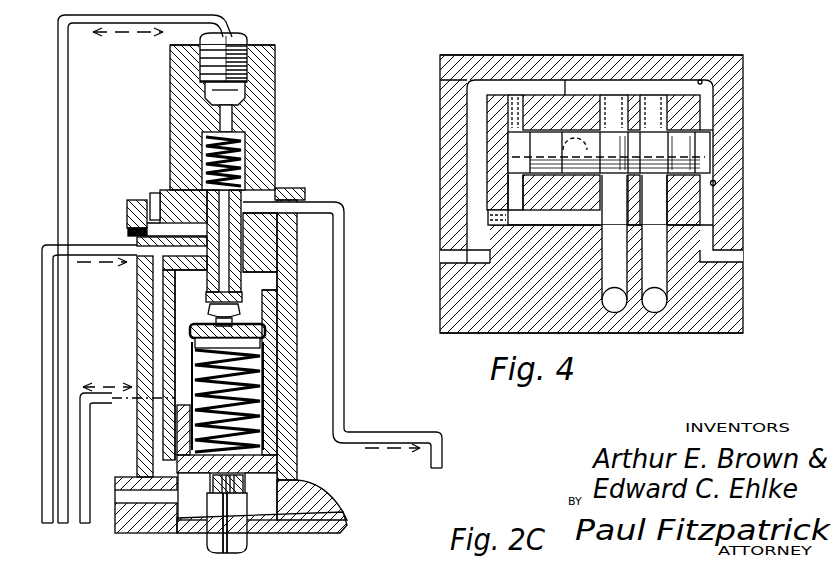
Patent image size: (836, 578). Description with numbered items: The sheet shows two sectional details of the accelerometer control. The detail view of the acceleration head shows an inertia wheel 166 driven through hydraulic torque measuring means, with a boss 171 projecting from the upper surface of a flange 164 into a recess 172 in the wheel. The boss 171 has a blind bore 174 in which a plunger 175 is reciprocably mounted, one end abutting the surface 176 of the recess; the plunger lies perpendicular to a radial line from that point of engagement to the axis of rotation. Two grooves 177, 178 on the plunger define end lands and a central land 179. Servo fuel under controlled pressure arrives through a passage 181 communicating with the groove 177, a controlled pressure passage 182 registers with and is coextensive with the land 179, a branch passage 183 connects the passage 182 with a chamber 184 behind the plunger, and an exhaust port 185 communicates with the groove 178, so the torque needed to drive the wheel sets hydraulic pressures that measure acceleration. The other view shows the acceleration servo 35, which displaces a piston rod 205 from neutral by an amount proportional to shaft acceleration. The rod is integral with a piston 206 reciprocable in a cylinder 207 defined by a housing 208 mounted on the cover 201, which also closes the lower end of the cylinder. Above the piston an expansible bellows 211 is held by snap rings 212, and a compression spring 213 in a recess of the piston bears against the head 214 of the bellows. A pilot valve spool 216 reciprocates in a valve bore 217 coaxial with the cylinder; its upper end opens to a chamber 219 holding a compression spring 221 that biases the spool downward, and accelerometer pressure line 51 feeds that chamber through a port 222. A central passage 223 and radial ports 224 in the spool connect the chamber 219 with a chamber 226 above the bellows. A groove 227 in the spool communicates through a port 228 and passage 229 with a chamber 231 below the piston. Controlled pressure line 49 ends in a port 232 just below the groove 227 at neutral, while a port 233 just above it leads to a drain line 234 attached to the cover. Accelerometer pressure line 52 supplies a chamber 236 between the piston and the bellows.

In FIG. 2C, the acceleration servo 35 is at (170, 108).
In FIG. 2C, the controlled pressure line 49 is at (47, 524).
In FIG. 2C, the accelerometer pressure line 51 is at (66, 524).
In FIG. 2C, the accelerometer pressure line 52 is at (88, 524).
In FIG. 2C, the cover 201 is at (345, 520).
In FIG. 2C, the piston rod 205 is at (247, 540).
In FIG. 2C, the piston 206 is at (278, 463).
In FIG. 2C, the cylinder 207 is at (297, 485).
In FIG. 2C, the housing 208 is at (275, 72).
In FIG. 2C, the expansible bellows 211 is at (265, 338).
In FIG. 2C, the snap rings 212 is at (265, 356).
In FIG. 2C, the compression spring 213 is at (262, 418).
In FIG. 2C, the head of the bellows 214 is at (240, 318).
In FIG. 2C, the pilot valve spool 216 is at (250, 178).
In FIG. 2C, the valve bore 217 is at (202, 177).
In FIG. 2C, the chamber 219 is at (252, 140).
In FIG. 2C, the compression spring 221 is at (205, 143).
In FIG. 2C, the port 222 is at (228, 95).
In FIG. 2C, the central passage 223 is at (245, 252).
In FIG. 2C, the radial ports 224 is at (242, 296).
In FIG. 2C, the chamber 226 is at (178, 295).
In FIG. 2C, the groove 227 is at (250, 222).
In FIG. 2C, the port 228 is at (130, 205).
In FIG. 2C, the passage 229 is at (160, 340).
In FIG. 2C, the chamber 231 is at (195, 500).
In FIG. 2C, the port 232 is at (178, 228).
In FIG. 2C, the port 233 is at (276, 193).
In FIG. 2C, the drain line 234 is at (390, 431).
In FIG. 2C, the chamber 236 is at (265, 392).
In FIG. 4, the flange 164 is at (743, 297).
In FIG. 4, the inertia wheel 166 is at (743, 78).
In FIG. 4, the boss 171 is at (565, 95).
In FIG. 4, the recess 172 is at (700, 80).
In FIG. 4, the blind bore 174 is at (582, 135).
In FIG. 4, the plunger 175 is at (712, 128).
In FIG. 4, the surface of the recess 176 is at (716, 184).
In FIG. 4, the groove 177 is at (668, 150).
In FIG. 4, the groove 178 is at (560, 122).
In FIG. 4, the central land 179 is at (620, 148).
In FIG. 4, the passage 181 is at (658, 275).
In FIG. 4, the controlled pressure passage 182 is at (607, 284).
In FIG. 4, the branch passage 183 is at (545, 222).
In FIG. 4, the chamber 184 is at (510, 157).
In FIG. 4, the exhaust port 185 is at (575, 182).